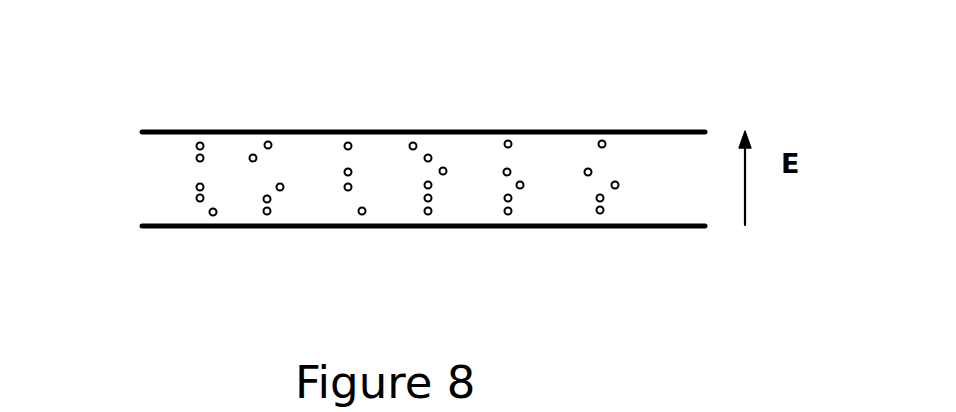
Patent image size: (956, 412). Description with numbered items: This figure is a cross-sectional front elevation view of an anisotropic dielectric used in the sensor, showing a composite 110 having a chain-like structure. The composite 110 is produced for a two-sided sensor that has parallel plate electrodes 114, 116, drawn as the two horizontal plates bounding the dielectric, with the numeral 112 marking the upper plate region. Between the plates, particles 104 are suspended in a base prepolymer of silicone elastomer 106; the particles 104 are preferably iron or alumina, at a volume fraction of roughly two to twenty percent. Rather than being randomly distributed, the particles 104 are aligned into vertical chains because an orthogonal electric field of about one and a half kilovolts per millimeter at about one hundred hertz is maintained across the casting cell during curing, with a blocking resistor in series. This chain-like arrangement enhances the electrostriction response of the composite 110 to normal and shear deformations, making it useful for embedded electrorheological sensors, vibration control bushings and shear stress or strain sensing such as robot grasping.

The particles 104 is at (441, 167).
The silicone elastomer 106 is at (150, 215).
The composite 110 is at (698, 90).
The top electrode 112 is at (699, 129).
The parallel plate electrode 114 is at (157, 130).
The parallel plate electrode 116 is at (167, 229).